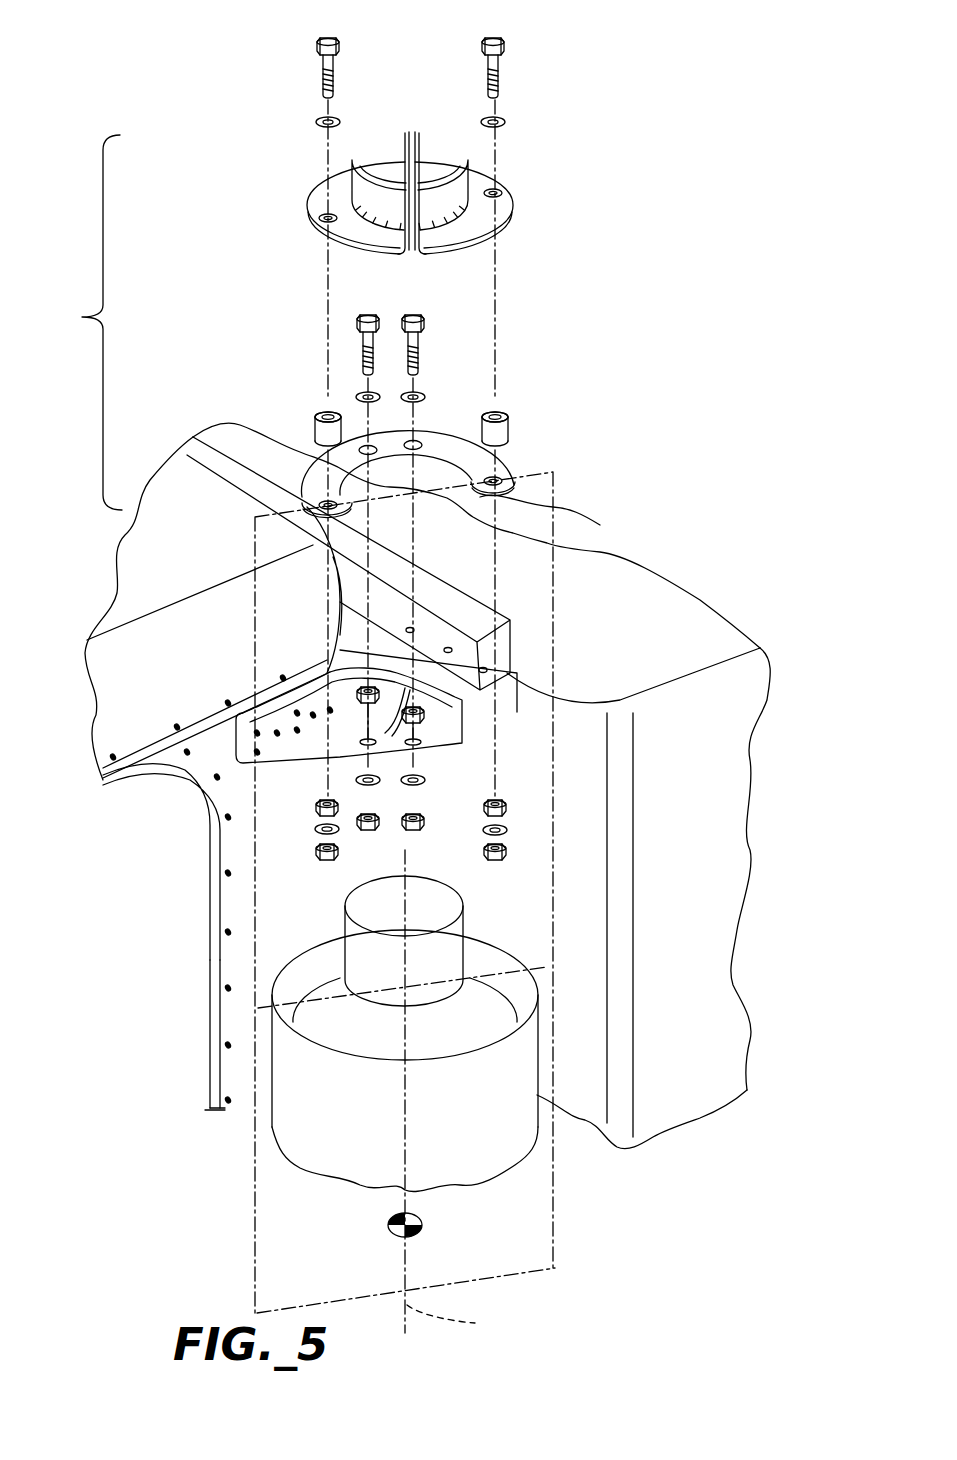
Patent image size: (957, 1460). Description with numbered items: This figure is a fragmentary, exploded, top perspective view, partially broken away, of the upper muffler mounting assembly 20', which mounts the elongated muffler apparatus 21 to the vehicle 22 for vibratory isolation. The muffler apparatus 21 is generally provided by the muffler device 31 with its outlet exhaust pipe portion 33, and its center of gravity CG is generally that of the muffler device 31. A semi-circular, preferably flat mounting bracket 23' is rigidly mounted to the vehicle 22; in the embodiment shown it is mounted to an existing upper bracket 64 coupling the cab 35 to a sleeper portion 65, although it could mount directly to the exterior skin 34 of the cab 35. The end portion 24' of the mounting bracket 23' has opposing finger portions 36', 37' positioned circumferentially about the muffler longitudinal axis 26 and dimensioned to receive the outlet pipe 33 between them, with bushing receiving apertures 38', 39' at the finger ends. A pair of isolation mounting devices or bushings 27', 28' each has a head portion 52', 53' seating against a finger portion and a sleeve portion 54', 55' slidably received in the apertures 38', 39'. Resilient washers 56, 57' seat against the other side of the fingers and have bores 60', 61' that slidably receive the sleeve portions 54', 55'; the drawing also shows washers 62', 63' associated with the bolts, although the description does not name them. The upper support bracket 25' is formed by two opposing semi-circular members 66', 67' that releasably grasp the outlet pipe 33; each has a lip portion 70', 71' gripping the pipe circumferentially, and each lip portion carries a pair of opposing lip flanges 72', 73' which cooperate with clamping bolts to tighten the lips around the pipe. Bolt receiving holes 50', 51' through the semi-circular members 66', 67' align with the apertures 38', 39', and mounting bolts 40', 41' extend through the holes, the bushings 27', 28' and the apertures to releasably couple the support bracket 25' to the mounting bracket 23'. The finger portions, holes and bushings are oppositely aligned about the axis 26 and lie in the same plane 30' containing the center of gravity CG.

The upper muffler mounting assembly 20' is at (78, 322).
The muffler apparatus 21 is at (552, 980).
The vehicle 22 is at (748, 961).
The mounting bracket 23' is at (398, 474).
The end portion 24' is at (334, 563).
The muffler support bracket 25' is at (483, 130).
The longitudinal axis 26 is at (457, 1322).
The isolation mounting device 27' is at (321, 335).
The isolation mounting device 28' is at (483, 335).
The plane 30' is at (197, 1090).
The muffler device 31 is at (540, 1028).
The outlet exhaust pipe portion 33 is at (465, 925).
The exterior skin 34 is at (265, 930).
The cab 35 is at (217, 1033).
The finger portion 36' is at (213, 608).
The finger portion 37' is at (544, 513).
The bushing receiving aperture 38' is at (257, 492).
The bushing receiving aperture 39' is at (551, 489).
The mounting bolt 40' is at (287, 66).
The mounting bolt 41' is at (535, 66).
The bolt receiving hole 50' is at (321, 185).
The bolt receiving hole 51' is at (502, 188).
The head portion 52' is at (287, 399).
The head portion 53' is at (536, 405).
The sleeve portion 54' is at (272, 406).
The sleeve portion 55' is at (536, 423).
The resilient washer 56 is at (316, 830).
The resilient washer 57' is at (555, 819).
The bore 60' is at (229, 801).
The bore 61' is at (596, 791).
The washer 62' is at (310, 367).
The washer 63' is at (495, 367).
The upper bracket 64 is at (497, 748).
The sleeper portion 65 is at (683, 620).
The semi-circular member 66' is at (286, 195).
The semi-circular member 67' is at (537, 181).
The lip portion 70' is at (316, 116).
The lip portion 71' is at (507, 120).
The lip flange 72' is at (322, 129).
The lip flange 73' is at (497, 131).
The center of gravity CG is at (420, 1233).